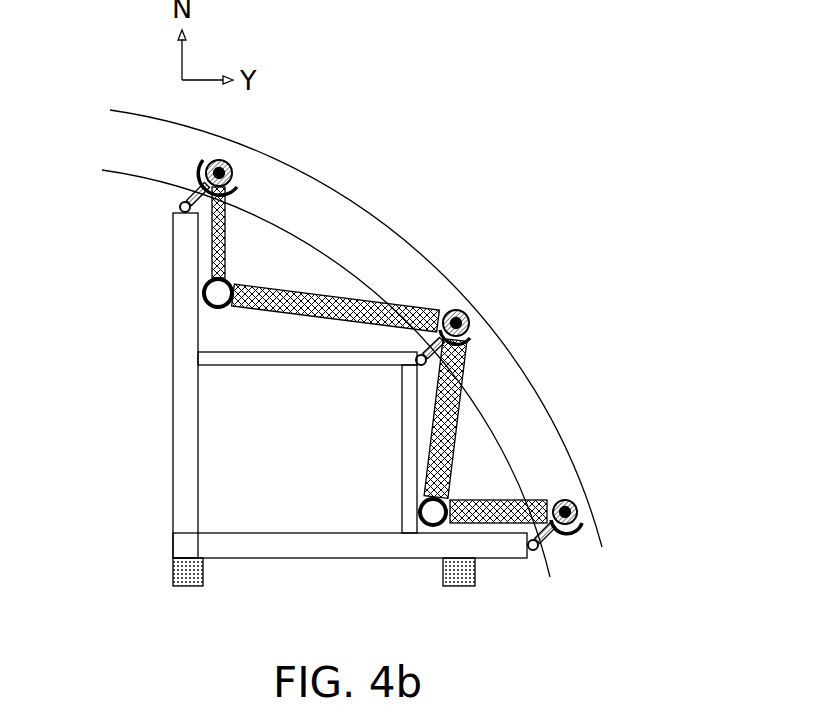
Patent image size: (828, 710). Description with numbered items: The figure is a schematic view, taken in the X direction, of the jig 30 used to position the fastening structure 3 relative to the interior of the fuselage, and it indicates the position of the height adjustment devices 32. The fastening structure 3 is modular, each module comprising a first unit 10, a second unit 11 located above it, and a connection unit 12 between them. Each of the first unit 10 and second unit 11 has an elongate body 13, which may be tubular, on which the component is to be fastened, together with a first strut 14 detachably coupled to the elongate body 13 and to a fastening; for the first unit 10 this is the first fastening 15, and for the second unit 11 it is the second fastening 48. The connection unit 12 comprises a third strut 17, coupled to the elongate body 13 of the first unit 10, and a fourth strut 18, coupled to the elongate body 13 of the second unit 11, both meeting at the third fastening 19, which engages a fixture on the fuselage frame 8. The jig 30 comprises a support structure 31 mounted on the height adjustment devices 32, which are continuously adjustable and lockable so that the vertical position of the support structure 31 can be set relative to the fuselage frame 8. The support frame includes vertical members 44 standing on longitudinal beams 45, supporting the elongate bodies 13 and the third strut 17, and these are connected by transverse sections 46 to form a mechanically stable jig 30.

The fastening structure 3 is at (507, 460).
The fuselage frame 8 is at (348, 235).
The first unit 10 is at (616, 484).
The second unit 11 is at (160, 228).
The connection unit 12 is at (476, 353).
The elongate body 13 is at (203, 300).
The first strut 14 is at (227, 225).
The first fastening 15 is at (580, 517).
The third strut 17 is at (462, 438).
The fourth strut 18 is at (383, 300).
The third fastening 19 is at (463, 312).
The jig 30 is at (293, 428).
The support structure 31 is at (407, 435).
The height adjustment device 32 is at (203, 586).
The vertical member 44 is at (180, 382).
The longitudinal beam 45 is at (183, 542).
The transverse section 46 is at (283, 357).
The second fastening 48 is at (221, 160).